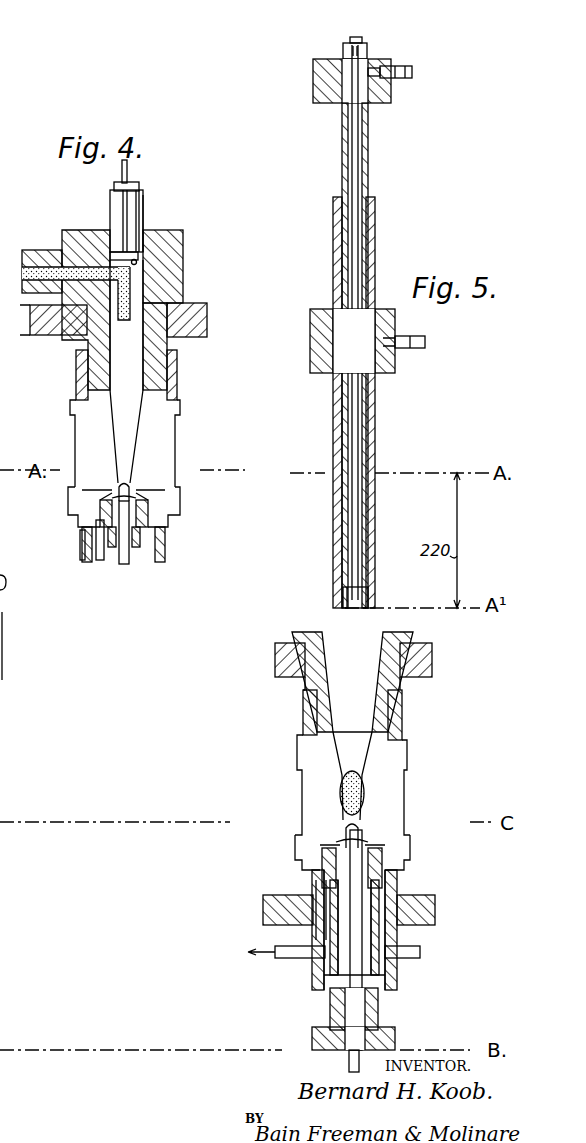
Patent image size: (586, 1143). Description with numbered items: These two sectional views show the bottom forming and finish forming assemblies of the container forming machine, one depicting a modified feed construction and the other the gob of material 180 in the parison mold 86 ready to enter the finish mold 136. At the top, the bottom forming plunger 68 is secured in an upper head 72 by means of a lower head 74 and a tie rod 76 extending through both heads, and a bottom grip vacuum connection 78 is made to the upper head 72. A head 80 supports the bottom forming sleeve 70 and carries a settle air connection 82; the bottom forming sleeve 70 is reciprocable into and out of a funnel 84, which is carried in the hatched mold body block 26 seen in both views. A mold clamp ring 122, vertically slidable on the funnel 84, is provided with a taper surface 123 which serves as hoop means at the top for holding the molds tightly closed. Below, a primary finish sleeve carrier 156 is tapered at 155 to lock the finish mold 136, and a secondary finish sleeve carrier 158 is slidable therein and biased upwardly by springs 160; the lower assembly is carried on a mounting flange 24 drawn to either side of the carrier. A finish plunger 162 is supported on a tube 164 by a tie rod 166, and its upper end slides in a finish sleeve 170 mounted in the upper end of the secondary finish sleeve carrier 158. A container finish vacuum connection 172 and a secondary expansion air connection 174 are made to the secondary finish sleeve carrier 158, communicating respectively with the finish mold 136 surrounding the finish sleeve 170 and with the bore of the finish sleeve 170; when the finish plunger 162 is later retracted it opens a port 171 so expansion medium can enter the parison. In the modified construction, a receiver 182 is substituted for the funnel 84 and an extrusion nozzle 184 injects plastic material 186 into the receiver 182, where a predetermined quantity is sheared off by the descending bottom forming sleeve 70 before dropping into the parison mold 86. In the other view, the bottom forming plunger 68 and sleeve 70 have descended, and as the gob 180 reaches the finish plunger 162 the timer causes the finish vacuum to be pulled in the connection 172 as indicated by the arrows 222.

In FIG. 5, the mounting flange 24 is at (263, 906).
In FIG. 4, the nozzle body block 26 is at (198, 318).
In FIG. 5, the nozzle body block 26 is at (285, 656).
In FIG. 4, the bottom forming plunger 68 is at (114, 188).
In FIG. 5, the bottom forming plunger 68 is at (341, 160).
In FIG. 4, the bottom forming sleeve 70 is at (143, 205).
In FIG. 5, the bottom forming sleeve 70 is at (375, 430).
In FIG. 5, the upper head 72 is at (313, 68).
In FIG. 4, the lower head 74 is at (138, 257).
In FIG. 5, the lower head 74 is at (350, 607).
In FIG. 4, the tie rod 76 is at (128, 168).
In FIG. 5, the tie rod 76 is at (360, 38).
In FIG. 5, the bottom grip vacuum connection 78 is at (398, 80).
In FIG. 5, the head 80 is at (310, 360).
In FIG. 5, the settle air connection 82 is at (425, 338).
In FIG. 5, the funnel 84 is at (378, 632).
In FIG. 4, the parison mold 86 is at (165, 458).
In FIG. 5, the parison mold 86 is at (385, 800).
In FIG. 4, the mold clamp ring 122 is at (170, 382).
In FIG. 5, the mold clamp ring 122 is at (403, 720).
In FIG. 5, the taper surface 123 is at (310, 742).
In FIG. 4, the finish mold 136 is at (170, 513).
In FIG. 5, the finish mold 136 is at (395, 852).
In FIG. 4, the taper 155 is at (80, 545).
In FIG. 4, the primary finish sleeve carrier 156 is at (167, 548).
In FIG. 5, the primary finish sleeve carrier 156 is at (397, 986).
In FIG. 4, the secondary finish sleeve carrier 158 is at (97, 562).
In FIG. 5, the springs 160 is at (330, 994).
In FIG. 4, the finish plunger 162 is at (126, 565).
In FIG. 5, the finish plunger 162 is at (364, 940).
In FIG. 5, the tube 164 is at (335, 1022).
In FIG. 5, the tie rod 166 is at (349, 1068).
In FIG. 4, the finish sleeve 170 is at (131, 489).
In FIG. 5, the finish sleeve 170 is at (362, 832).
In FIG. 4, the port 171 is at (138, 501).
In FIG. 5, the port 171 is at (370, 842).
In FIG. 5, the container finish vacuum connection 172 is at (300, 958).
In FIG. 5, the secondary expansion air connection 174 is at (410, 958).
In FIG. 5, the gob of material 180 is at (365, 790).
In FIG. 4, the receiver 182 is at (128, 300).
In FIG. 4, the extrusion nozzle 184 is at (56, 250).
In FIG. 4, the plastic material 186 is at (137, 262).
In FIG. 5, the arrows 222 is at (312, 944).